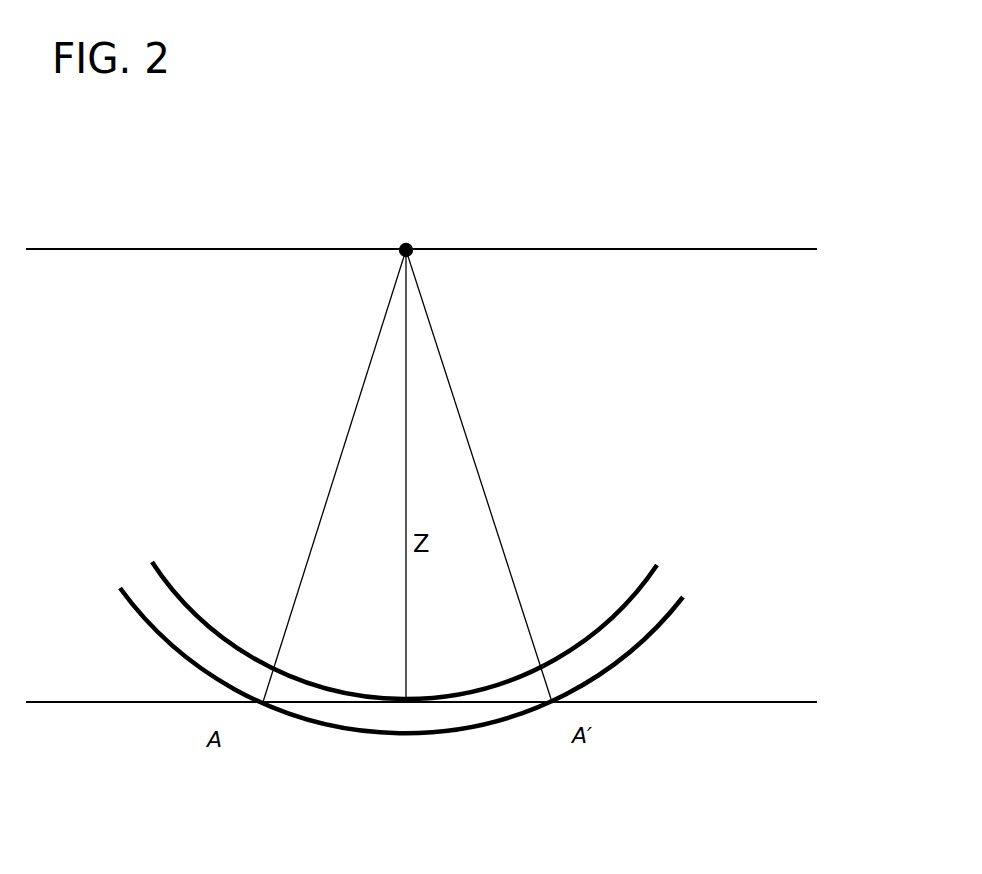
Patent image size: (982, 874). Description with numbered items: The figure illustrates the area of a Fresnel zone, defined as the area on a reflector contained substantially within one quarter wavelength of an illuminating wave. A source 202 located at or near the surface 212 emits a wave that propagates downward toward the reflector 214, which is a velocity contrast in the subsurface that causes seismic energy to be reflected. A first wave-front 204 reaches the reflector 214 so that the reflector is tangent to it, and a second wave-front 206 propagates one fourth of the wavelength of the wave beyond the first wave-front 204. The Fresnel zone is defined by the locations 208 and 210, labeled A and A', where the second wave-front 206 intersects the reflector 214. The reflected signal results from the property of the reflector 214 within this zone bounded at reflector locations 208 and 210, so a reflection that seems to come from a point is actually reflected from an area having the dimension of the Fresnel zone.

The source 202 is at (408, 246).
The first wave-front 204 is at (655, 568).
The second wave-front 206 is at (680, 604).
The reflector location A 208 is at (263, 702).
The reflector location A' 210 is at (552, 702).
The surface 212 is at (635, 249).
The reflector 214 is at (693, 702).